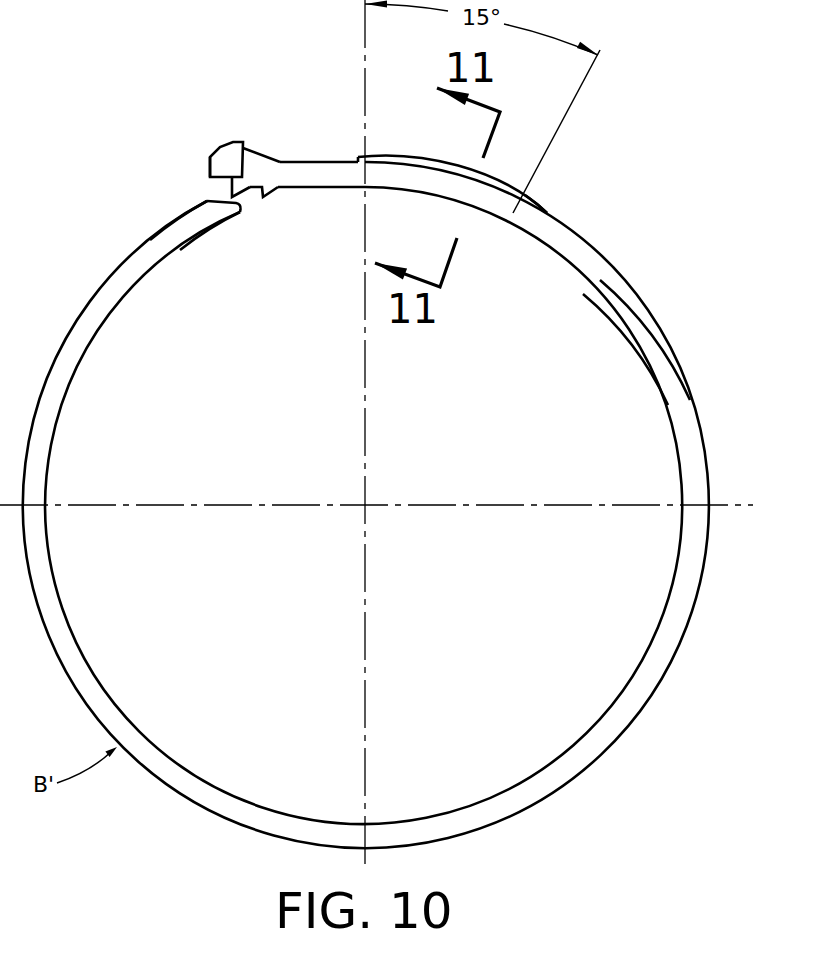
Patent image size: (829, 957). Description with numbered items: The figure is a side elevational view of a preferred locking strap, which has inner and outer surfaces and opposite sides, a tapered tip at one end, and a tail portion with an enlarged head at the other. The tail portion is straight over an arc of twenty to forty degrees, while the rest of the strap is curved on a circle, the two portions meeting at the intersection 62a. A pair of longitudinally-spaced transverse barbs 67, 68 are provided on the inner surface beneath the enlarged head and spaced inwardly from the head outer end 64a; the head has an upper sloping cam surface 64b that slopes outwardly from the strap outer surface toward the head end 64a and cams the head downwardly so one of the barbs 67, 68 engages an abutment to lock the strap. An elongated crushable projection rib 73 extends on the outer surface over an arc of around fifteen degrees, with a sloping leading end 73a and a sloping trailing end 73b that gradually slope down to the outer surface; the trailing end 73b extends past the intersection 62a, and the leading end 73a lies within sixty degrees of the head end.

The intersection 62a is at (348, 188).
The head outer end 64a is at (210, 166).
The upper sloping cam surface 64b is at (258, 152).
The transverse barb 67 is at (240, 193).
The transverse barb 68 is at (272, 193).
The elongated projection rib 73 is at (507, 183).
The sloping leading end 73a is at (549, 212).
The sloping trailing end 73b is at (372, 156).